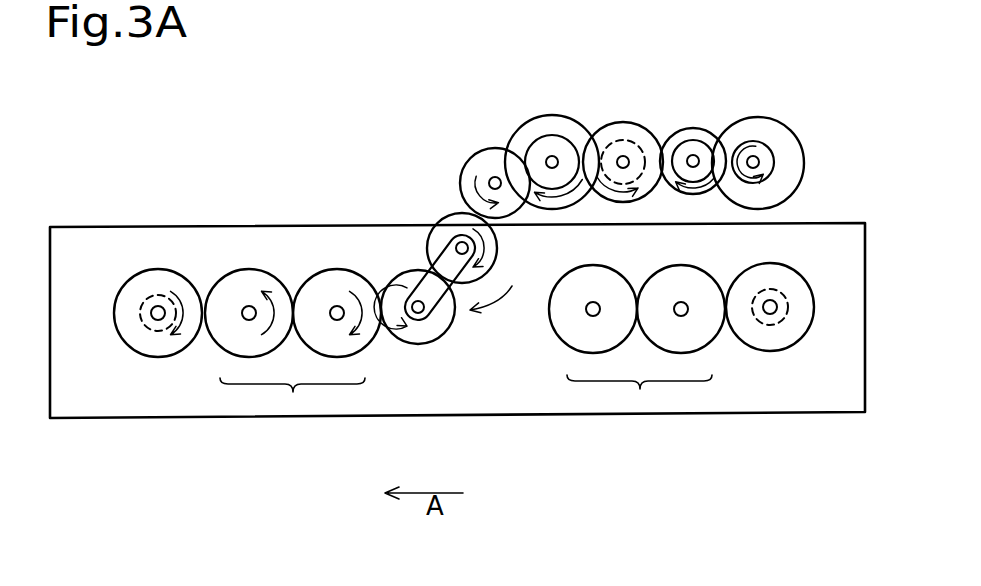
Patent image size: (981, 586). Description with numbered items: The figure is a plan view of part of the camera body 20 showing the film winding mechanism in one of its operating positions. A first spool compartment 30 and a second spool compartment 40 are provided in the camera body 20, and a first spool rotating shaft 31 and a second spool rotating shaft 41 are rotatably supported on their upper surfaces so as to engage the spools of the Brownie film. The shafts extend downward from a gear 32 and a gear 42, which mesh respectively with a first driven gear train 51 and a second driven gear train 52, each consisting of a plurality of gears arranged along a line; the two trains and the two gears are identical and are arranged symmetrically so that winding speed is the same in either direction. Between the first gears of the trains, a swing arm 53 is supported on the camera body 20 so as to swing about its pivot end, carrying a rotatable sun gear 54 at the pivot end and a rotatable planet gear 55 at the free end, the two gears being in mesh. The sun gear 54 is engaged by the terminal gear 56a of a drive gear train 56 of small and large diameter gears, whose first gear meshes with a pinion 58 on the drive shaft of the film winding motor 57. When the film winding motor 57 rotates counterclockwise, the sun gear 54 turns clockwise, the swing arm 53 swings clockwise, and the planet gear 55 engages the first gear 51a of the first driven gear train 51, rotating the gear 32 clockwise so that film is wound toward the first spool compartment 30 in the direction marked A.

The camera body 20 is at (230, 248).
The first spool compartment 30 is at (185, 428).
The first spool rotating shaft 31 is at (155, 296).
The gear 32 is at (160, 346).
The second spool compartment 40 is at (743, 420).
The second spool rotating shaft 41 is at (788, 307).
The gear 42 is at (778, 337).
The first driven gear train 51 is at (293, 392).
The first gear of the first driven gear train 51a is at (347, 278).
The second driven gear train 52 is at (640, 389).
The swing arm 53 is at (403, 277).
The sun gear 54 is at (450, 232).
The planet gear 55 is at (427, 330).
The drive gear train 56 is at (471, 95).
The terminal gear 56a is at (490, 165).
The film winding motor 57 is at (782, 178).
The pinion 58 is at (765, 150).